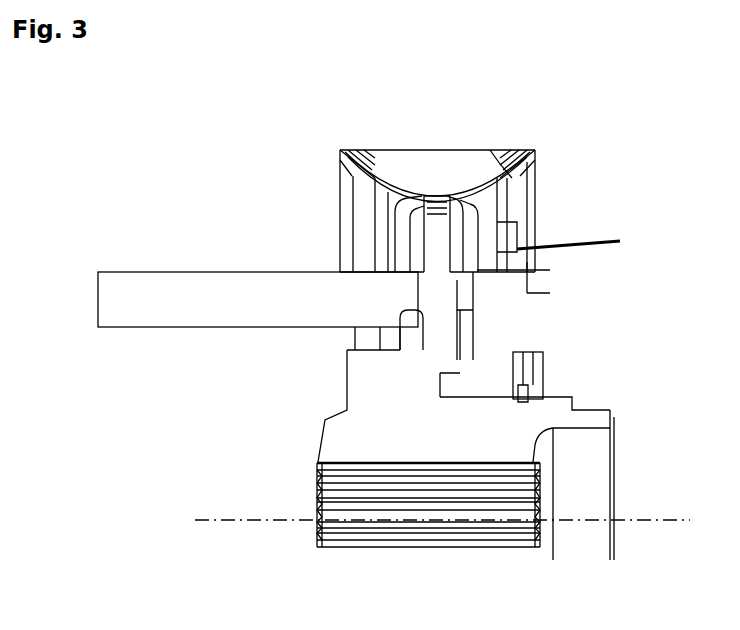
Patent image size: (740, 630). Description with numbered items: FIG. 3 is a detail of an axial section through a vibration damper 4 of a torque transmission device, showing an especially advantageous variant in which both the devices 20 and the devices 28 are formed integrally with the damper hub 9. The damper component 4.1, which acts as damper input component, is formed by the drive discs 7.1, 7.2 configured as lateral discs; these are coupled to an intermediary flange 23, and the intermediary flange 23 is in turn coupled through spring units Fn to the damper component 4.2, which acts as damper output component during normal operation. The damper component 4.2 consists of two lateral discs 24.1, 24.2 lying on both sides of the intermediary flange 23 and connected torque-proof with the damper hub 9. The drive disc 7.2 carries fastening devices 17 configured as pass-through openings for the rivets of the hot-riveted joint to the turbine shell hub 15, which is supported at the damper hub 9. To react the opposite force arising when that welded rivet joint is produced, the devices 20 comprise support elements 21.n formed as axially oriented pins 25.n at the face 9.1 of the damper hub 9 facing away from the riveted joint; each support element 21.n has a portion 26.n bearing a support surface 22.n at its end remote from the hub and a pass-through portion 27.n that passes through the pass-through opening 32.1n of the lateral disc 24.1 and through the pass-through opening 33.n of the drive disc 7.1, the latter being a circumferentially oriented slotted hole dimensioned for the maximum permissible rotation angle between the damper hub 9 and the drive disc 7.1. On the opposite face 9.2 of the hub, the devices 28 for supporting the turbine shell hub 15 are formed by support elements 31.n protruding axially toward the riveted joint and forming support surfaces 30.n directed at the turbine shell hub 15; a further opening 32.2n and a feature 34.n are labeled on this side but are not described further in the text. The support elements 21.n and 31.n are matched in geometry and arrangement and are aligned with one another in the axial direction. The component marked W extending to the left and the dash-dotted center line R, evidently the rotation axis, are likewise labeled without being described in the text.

The vibration damper 4 is at (459, 100).
The damper component 4.1 is at (356, 187).
The damper component 4.2 is at (490, 201).
The drive disc 7.1 is at (360, 162).
The drive disc 7.2 is at (530, 208).
The lateral disc 24.1 is at (405, 170).
The lateral disc 24.2 is at (500, 173).
The intermediary flange 23 is at (450, 172).
The spring units Fn is at (478, 167).
The fastening devices 17 is at (582, 239).
The pass through opening 32.1n is at (417, 278).
The second inclined surface 32.2n is at (530, 270).
The pass through opening 33.n is at (398, 288).
The support element 31.n is at (505, 287).
The groove edge 34.n is at (558, 331).
The support surface 30.n is at (500, 300).
The turbine shell hub 15 is at (533, 323).
The devices for at least indirect support 28 is at (478, 297).
The devices for reacting an opposite force 20 is at (402, 300).
The support surface 22.n is at (405, 296).
The portion bearing the support surface 26.n is at (405, 302).
The support element 21.n is at (420, 302).
The pin 25.n is at (269, 440).
The pass through portion 27.n is at (417, 302).
The damper hub 9 is at (500, 455).
The face of the damper hub 9.1 is at (362, 541).
The sleeve second end 9.2 is at (463, 317).
The tool/workpiece arm W is at (123, 290).
The rotation axis R is at (278, 520).